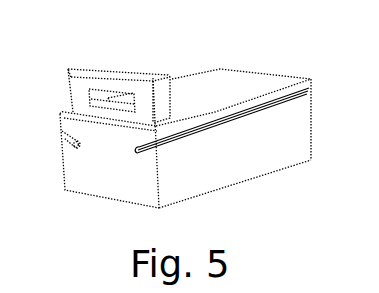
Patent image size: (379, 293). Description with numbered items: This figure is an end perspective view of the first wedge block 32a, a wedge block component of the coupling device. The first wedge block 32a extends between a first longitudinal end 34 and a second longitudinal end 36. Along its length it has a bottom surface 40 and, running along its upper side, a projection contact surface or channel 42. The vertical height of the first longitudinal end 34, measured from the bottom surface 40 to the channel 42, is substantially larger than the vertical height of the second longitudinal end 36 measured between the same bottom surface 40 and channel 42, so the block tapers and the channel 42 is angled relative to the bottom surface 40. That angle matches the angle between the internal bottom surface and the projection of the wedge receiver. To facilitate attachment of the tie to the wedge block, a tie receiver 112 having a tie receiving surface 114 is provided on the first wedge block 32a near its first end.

The first wedge block 32a is at (175, 206).
The first longitudinal end 34 is at (312, 149).
The second longitudinal end 36 is at (64, 182).
The bottom surface 40 is at (252, 180).
The projection contact surface or channel 42 is at (304, 89).
The tie receiver 112 is at (170, 76).
The tie receiving surface 114 is at (94, 99).